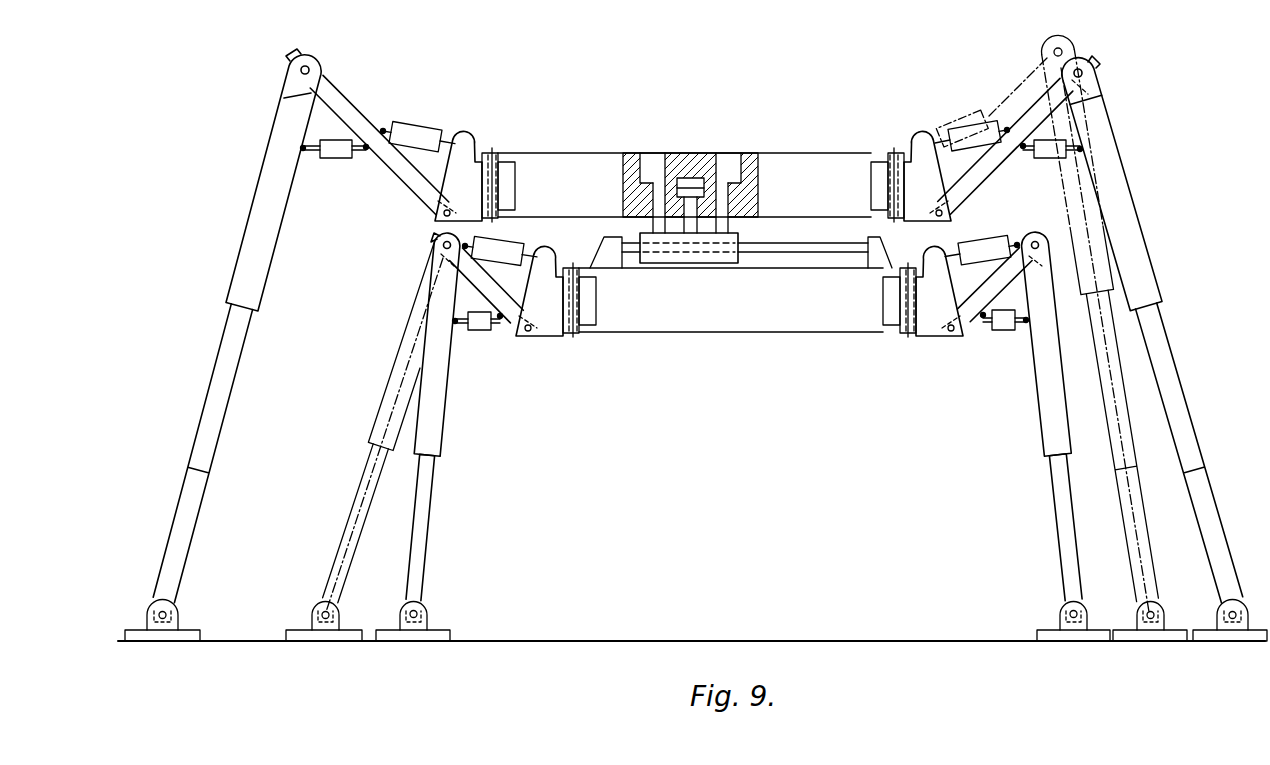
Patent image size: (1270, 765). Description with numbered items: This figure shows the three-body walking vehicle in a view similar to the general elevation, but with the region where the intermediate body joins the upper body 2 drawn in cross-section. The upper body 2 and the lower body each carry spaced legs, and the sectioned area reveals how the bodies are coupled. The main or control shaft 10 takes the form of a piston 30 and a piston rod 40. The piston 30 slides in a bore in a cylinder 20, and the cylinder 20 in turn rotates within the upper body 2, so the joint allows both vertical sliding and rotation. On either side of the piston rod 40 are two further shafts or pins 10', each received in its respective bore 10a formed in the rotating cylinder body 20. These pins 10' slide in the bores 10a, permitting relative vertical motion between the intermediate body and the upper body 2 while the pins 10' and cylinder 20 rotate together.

The upper body 2 is at (563, 184).
The main or control shaft 10 is at (689, 254).
The shafts or pins 10' is at (690, 176).
The bores 10a is at (657, 158).
The cylinder 20 is at (671, 175).
The piston 30 is at (689, 188).
The piston rod 40 is at (695, 190).